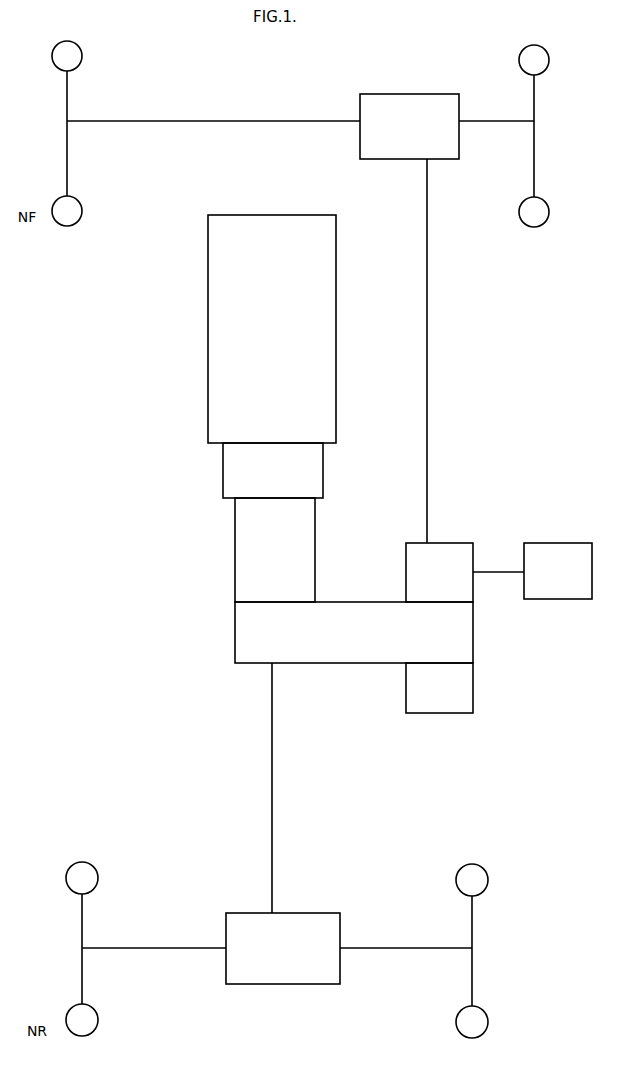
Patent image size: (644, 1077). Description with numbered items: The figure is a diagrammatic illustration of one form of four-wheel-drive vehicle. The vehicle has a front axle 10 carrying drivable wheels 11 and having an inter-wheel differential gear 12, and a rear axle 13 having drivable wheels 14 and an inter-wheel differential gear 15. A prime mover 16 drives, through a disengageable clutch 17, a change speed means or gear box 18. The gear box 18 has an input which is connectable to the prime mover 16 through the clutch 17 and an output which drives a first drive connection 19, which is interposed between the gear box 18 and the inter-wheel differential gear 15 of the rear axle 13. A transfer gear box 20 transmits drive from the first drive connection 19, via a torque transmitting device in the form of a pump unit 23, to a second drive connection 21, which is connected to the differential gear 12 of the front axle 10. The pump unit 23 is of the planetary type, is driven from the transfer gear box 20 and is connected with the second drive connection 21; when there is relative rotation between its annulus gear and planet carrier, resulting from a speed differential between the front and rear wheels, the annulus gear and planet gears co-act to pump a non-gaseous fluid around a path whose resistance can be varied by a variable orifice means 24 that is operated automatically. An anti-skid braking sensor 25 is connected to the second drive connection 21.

The front axle 10 is at (275, 121).
The drivable wheels 11 is at (67, 97).
The inter-wheel differential gear 12 is at (409, 126).
The rear axle 13 is at (160, 948).
The drivable wheels 14 is at (82, 940).
The inter-wheel differential gear 15 is at (283, 948).
The prime mover 16 is at (272, 329).
The disengageable clutch 17 is at (273, 470).
The gear box 18 is at (275, 550).
The first drive connection 19 is at (272, 800).
The transfer gear box 20 is at (354, 632).
The second drive connection 21 is at (432, 332).
The pump unit 23 is at (465, 572).
The variable orifice means 24 is at (558, 571).
The anti-skid braking sensor 25 is at (439, 688).